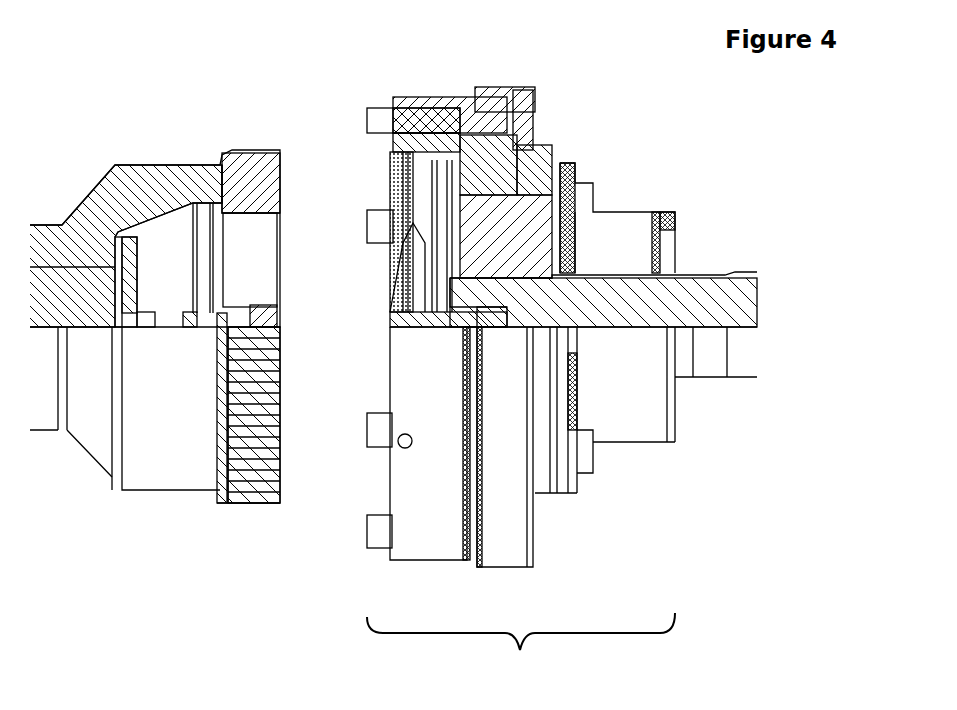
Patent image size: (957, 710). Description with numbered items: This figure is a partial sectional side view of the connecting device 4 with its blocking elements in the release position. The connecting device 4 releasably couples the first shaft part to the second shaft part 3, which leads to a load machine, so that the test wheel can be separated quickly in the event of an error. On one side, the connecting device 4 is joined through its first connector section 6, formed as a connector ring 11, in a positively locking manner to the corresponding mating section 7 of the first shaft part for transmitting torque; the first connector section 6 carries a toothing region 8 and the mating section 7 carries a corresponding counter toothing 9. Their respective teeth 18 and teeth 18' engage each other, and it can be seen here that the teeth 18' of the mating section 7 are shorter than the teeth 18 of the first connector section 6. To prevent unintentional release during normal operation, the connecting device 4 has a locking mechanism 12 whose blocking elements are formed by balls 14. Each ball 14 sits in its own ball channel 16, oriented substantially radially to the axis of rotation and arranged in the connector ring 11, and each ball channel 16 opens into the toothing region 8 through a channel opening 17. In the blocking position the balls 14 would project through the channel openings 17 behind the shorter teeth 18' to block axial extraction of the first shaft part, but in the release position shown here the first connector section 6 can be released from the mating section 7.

The second shaft part 3 is at (740, 367).
The connecting device 4 is at (521, 502).
The first connector section 6 is at (385, 197).
The mating section 7 is at (270, 480).
The toothing region 8 is at (440, 167).
The counter toothing 9 is at (246, 490).
The connector ring 11 is at (428, 542).
The locking mechanism 12 is at (396, 115).
The balls 14 is at (408, 148).
The ball channel 16 is at (405, 85).
The channel opening 17 is at (399, 143).
The teeth of first connector section 18 is at (474, 180).
The teeth of mating section 18' is at (290, 463).